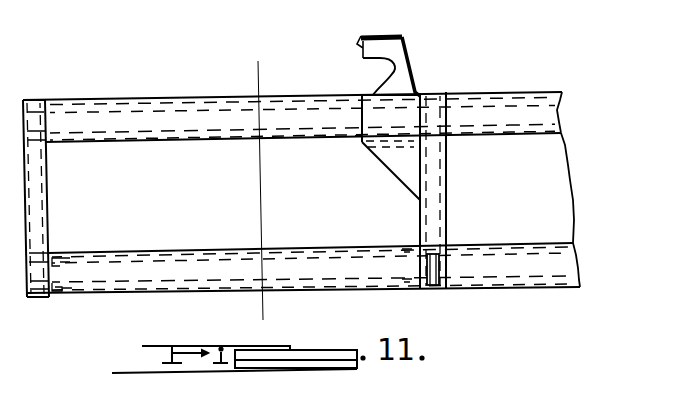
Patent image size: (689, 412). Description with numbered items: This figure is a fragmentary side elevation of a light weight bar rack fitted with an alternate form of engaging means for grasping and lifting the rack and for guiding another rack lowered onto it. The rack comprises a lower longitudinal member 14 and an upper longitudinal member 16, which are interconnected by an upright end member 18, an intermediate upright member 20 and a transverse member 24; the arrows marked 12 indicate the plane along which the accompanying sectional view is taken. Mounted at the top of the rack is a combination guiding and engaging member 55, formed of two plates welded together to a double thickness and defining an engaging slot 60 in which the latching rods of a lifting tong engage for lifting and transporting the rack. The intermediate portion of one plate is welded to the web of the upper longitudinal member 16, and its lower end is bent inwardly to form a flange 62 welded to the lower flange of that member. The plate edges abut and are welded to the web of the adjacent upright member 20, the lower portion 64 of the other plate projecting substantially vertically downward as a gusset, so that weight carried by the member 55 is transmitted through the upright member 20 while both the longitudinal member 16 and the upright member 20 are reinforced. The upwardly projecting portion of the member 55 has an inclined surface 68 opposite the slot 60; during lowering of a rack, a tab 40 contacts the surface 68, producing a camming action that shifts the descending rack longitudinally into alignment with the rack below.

The section line 12- 12 is at (228, 58).
The lower longitudinal member 14 is at (115, 297).
The upper longitudinal member 16 is at (153, 97).
The upright end member 18 is at (45, 183).
The intermediate upright member 20 is at (448, 188).
The transverse member 24 is at (413, 247).
The tab 40 is at (435, 288).
The combination guiding and engaging member 55 is at (414, 70).
The engaging slot 60 is at (373, 60).
The flange 62 is at (362, 152).
The lower portion 64 is at (403, 163).
The inclined surface 68 is at (403, 43).